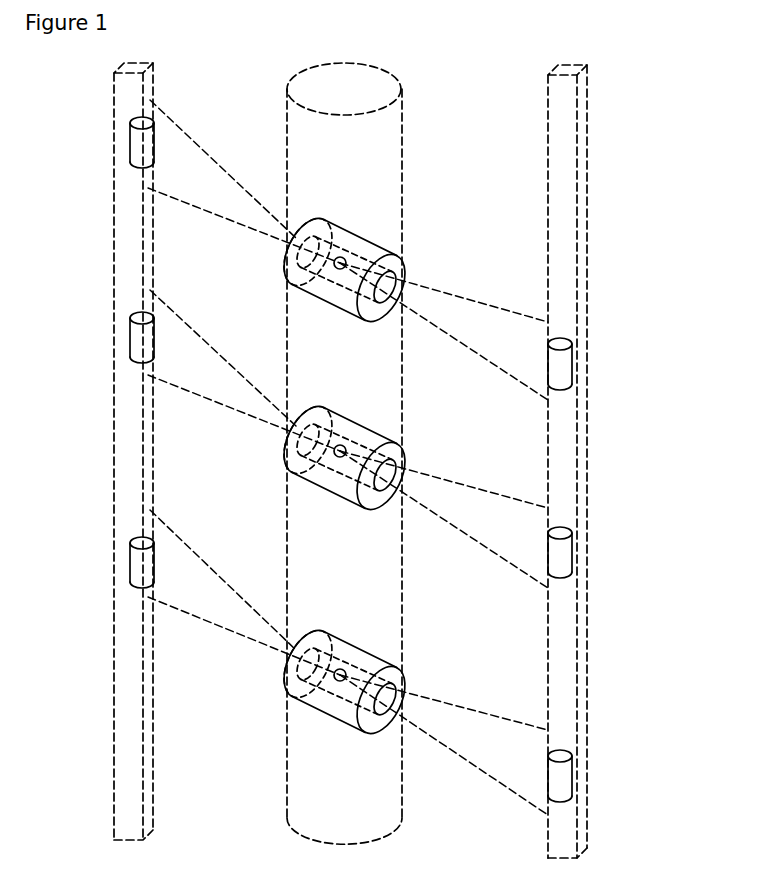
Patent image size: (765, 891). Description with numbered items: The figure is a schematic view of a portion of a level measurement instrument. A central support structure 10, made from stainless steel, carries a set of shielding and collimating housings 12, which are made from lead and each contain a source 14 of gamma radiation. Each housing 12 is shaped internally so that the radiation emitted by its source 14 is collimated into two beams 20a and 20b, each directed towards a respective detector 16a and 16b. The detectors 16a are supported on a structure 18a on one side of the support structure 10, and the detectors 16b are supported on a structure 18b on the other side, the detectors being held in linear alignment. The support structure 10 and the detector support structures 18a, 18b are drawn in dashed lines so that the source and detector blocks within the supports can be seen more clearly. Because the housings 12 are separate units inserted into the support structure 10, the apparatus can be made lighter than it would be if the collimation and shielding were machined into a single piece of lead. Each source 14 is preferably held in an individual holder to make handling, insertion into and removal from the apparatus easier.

The support structure 10 is at (390, 157).
The shielding and collimating housing 12 is at (380, 250).
The source of gamma radiation 14 is at (297, 289).
The detector 16a is at (156, 140).
The detector 16b is at (563, 360).
The detector support structure 18a is at (150, 262).
The detector support structure 18b is at (568, 223).
The beam of radiation 20a is at (238, 388).
The beam of radiation 20b is at (458, 315).